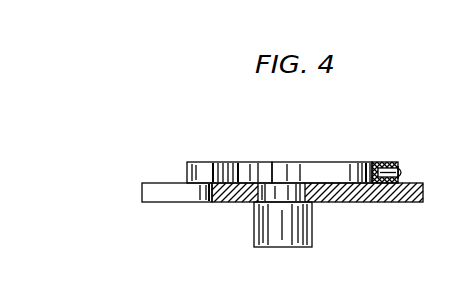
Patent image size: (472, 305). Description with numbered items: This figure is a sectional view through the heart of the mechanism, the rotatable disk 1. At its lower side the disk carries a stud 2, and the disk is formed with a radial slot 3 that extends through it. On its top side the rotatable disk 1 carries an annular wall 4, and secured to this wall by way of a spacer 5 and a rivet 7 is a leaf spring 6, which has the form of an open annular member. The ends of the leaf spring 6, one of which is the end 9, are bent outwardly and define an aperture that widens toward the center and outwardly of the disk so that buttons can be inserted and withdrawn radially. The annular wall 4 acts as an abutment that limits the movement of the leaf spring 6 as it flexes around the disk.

The rotatable disk 1 is at (409, 193).
The stud 2 is at (272, 231).
The radial slot 3 is at (163, 191).
The annular wall 4 is at (395, 163).
The spacer 5 is at (384, 166).
The leaf spring 6 is at (346, 169).
The rivet 7 is at (401, 173).
The end of the leaf spring 9 is at (215, 167).